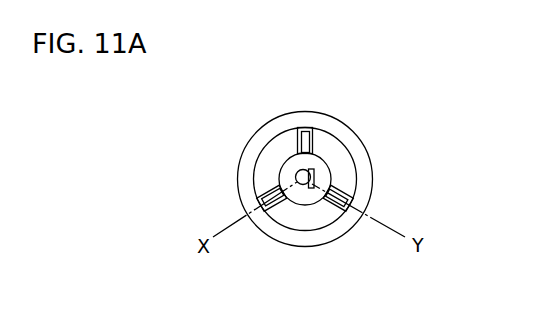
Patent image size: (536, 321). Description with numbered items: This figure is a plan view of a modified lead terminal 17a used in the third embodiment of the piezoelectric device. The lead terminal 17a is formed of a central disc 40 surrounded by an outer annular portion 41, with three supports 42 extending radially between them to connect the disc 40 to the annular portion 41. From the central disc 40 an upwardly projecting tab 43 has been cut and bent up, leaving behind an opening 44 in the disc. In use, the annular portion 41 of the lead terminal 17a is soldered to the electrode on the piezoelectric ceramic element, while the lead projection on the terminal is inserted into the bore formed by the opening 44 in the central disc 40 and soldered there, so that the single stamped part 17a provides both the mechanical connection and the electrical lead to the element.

The lead terminal 17a is at (375, 180).
The central disc 40 is at (310, 162).
The outer annular portion 41 is at (267, 132).
The supports 42 is at (308, 142).
The upwardly projecting tab 43 is at (314, 172).
The opening 44 is at (296, 178).